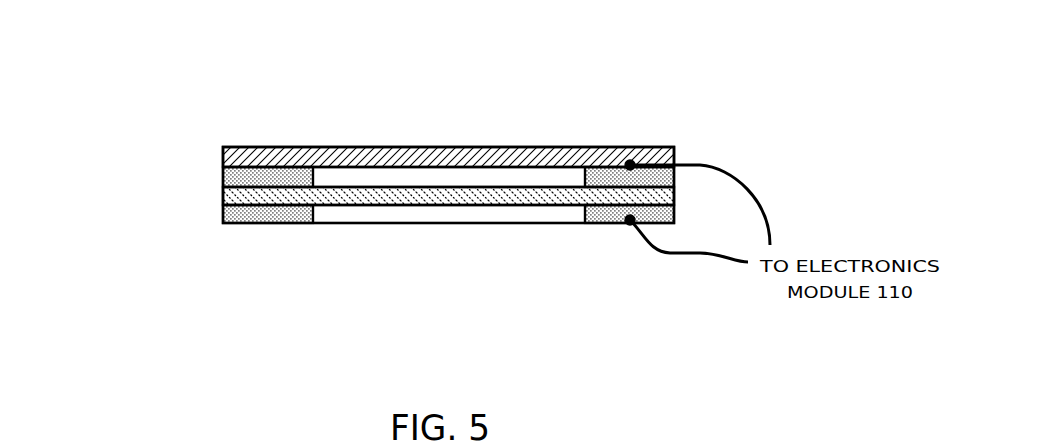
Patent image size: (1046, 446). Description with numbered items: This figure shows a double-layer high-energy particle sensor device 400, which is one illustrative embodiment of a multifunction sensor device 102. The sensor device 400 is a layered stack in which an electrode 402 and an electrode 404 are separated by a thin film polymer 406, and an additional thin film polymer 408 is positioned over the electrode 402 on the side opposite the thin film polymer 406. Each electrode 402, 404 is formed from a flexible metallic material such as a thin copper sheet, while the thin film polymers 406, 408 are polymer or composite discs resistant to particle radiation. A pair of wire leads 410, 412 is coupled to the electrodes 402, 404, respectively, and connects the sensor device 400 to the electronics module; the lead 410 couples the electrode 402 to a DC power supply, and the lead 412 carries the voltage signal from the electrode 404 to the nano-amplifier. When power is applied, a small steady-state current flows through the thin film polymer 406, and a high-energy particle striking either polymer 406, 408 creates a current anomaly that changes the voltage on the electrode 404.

The multifunction sensor device 102 is at (112, 108).
The double-layer high-energy particle sensor device 400 is at (864, 118).
The electrode 402 is at (237, 177).
The electrode 404 is at (238, 215).
The thin film polymer 406 is at (360, 193).
The additional thin film polymer 408 is at (283, 157).
The wire lead 410 is at (730, 172).
The wire lead 412 is at (700, 255).